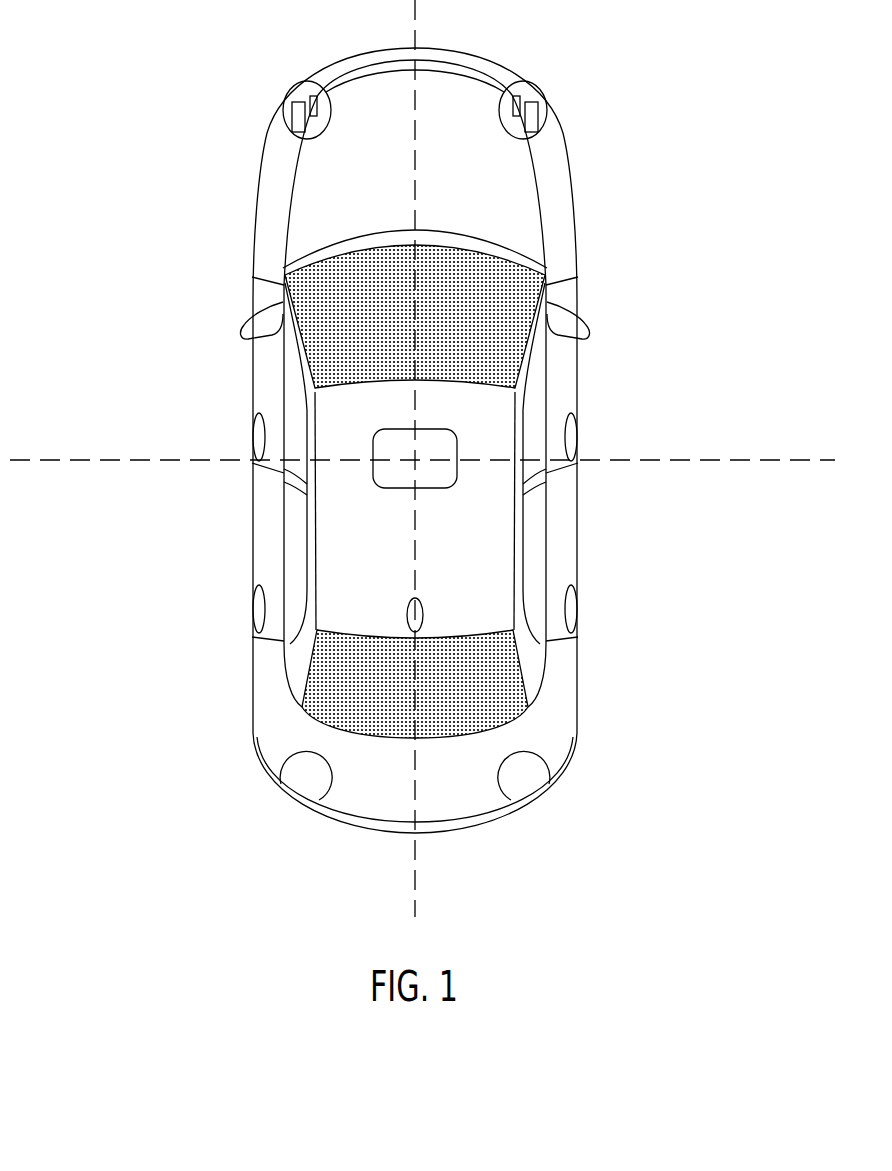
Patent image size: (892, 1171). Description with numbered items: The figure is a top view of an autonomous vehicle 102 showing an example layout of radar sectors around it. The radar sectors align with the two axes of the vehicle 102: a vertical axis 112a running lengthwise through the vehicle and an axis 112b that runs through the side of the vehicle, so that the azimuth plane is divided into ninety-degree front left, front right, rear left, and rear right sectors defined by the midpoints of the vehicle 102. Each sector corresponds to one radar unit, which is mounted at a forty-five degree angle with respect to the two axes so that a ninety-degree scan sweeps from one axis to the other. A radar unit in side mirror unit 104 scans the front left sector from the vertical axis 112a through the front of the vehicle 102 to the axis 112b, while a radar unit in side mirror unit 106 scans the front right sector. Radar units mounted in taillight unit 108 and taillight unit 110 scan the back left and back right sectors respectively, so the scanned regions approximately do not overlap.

The autonomous vehicle 102 is at (360, 50).
The side mirror unit 104 is at (250, 317).
The side mirror unit 106 is at (580, 317).
The taillight unit 108 is at (303, 777).
The taillight unit 110 is at (540, 770).
The vertical axis 112a is at (415, 880).
The axis 112b is at (143, 460).